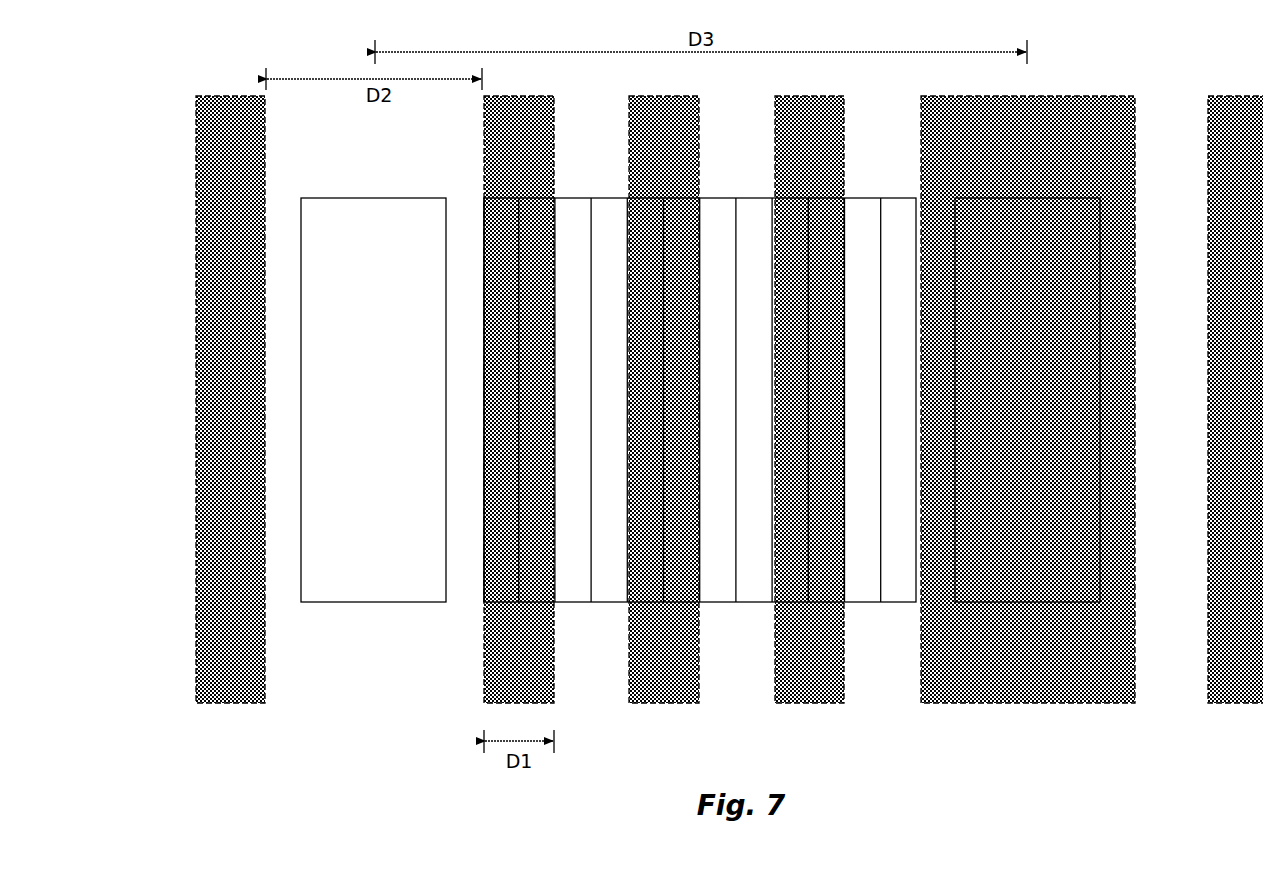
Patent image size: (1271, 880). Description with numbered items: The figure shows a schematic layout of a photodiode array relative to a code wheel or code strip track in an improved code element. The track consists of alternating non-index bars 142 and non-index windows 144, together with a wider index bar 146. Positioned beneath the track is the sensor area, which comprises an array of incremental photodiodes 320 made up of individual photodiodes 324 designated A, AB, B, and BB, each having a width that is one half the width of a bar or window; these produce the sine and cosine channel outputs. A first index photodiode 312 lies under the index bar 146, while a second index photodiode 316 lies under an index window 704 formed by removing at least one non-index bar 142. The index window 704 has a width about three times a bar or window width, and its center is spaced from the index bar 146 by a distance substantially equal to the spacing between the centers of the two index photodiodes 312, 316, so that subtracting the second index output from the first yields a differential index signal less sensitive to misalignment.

The non-index bar 142 is at (227, 695).
The non-index window 144 is at (1163, 100).
The index bar 146 is at (1022, 695).
The first index photodiode 312 is at (1020, 190).
The second index photodiode 316 is at (363, 188).
The array of incremental photodiodes 320 is at (745, 150).
The photodiode 324 is at (494, 190).
The index window 704 is at (371, 702).